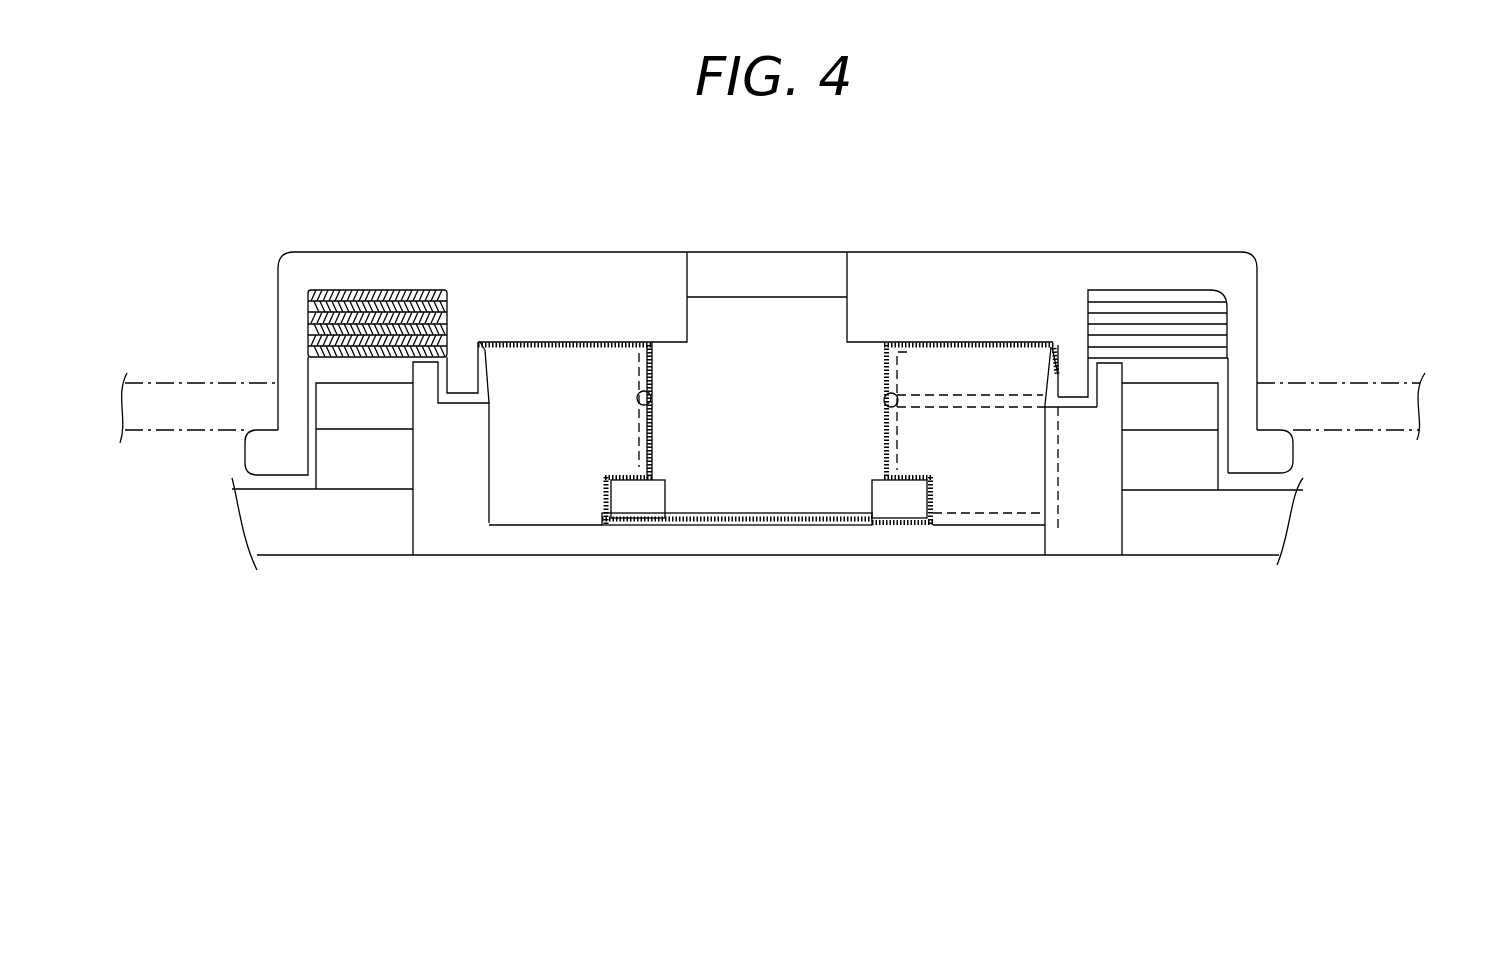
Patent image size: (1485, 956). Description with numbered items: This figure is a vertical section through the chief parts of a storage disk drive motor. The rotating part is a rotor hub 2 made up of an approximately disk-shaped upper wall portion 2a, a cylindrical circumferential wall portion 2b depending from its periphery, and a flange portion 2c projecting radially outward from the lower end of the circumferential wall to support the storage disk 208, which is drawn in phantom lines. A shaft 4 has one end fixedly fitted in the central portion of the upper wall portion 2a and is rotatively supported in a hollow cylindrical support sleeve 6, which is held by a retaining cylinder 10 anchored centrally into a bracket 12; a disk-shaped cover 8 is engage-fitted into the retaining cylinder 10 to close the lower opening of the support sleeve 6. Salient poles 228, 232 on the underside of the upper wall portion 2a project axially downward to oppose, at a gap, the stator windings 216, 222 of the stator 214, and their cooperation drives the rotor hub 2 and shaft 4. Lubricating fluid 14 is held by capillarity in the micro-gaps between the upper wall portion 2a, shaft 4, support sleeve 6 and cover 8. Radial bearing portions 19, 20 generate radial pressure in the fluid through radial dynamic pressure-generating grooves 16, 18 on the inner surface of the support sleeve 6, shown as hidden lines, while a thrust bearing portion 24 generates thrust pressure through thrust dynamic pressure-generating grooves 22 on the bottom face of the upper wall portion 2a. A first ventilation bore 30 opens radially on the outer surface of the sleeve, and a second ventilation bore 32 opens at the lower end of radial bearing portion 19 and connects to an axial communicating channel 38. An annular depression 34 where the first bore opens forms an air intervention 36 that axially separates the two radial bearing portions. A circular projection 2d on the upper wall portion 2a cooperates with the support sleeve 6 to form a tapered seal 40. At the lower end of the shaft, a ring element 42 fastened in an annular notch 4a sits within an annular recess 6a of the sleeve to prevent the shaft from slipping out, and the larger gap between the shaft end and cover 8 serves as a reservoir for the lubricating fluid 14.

The rotor hub 2 is at (1242, 252).
The upper wall portion 2a is at (1125, 278).
The circumferential wall portion 2b is at (1258, 352).
The flange portion 2c is at (1275, 458).
The circular projection 2d is at (458, 375).
The shaft 4 is at (773, 305).
The annular notch 4a is at (645, 500).
The support sleeve 6 is at (957, 372).
The annular recess 6a is at (613, 498).
The cover 8 is at (910, 540).
The retaining cylinder 10 is at (1102, 515).
The bracket 12 is at (1243, 540).
The lubricating fluid 14 is at (760, 527).
The radial dynamic pressure-generating groove 16 is at (897, 458).
The radial dynamic pressure-generating groove 18 is at (918, 338).
The radial bearing portion 19 is at (667, 453).
The radial bearing portion 20 is at (868, 370).
The thrust dynamic pressure-generating grooves 22 is at (597, 333).
The thrust bearing portion 24 is at (617, 328).
The first ventilation bore 30 is at (998, 407).
The second ventilation bore 32 is at (1005, 528).
The annular depression 34 is at (652, 397).
The air intervention 36 is at (887, 403).
The communicating channel 38 is at (1058, 540).
The tapered seal 40 is at (1070, 375).
The ring element 42 is at (887, 507).
The storage disk 208 is at (1388, 423).
The stator 214 is at (322, 376).
The stator winding 216 is at (1182, 407).
The stator winding 222 is at (340, 407).
The salient pole 228 is at (1167, 312).
The salient pole 232 is at (338, 292).